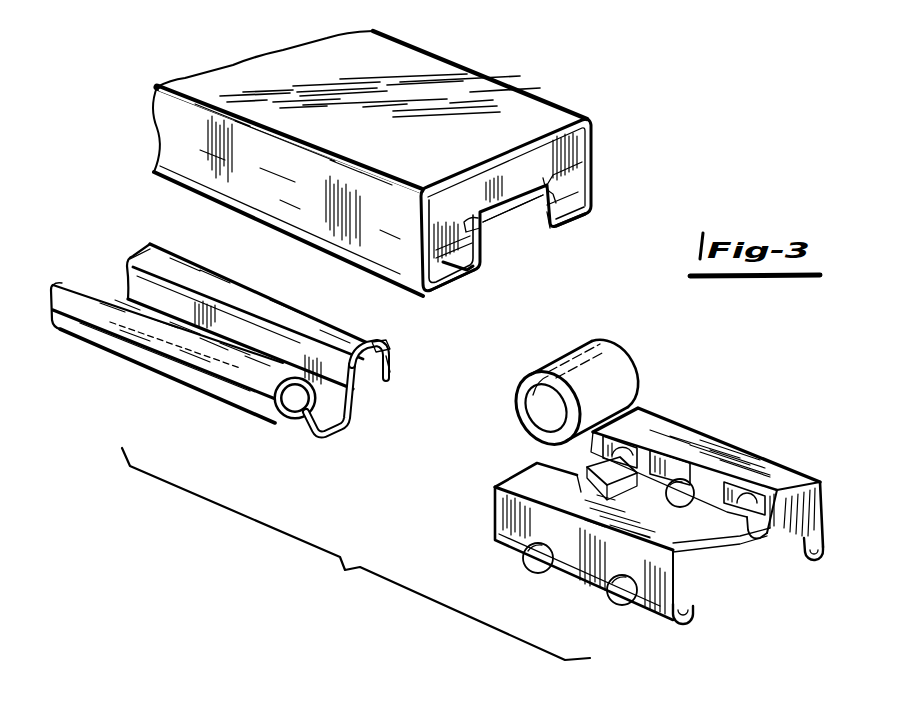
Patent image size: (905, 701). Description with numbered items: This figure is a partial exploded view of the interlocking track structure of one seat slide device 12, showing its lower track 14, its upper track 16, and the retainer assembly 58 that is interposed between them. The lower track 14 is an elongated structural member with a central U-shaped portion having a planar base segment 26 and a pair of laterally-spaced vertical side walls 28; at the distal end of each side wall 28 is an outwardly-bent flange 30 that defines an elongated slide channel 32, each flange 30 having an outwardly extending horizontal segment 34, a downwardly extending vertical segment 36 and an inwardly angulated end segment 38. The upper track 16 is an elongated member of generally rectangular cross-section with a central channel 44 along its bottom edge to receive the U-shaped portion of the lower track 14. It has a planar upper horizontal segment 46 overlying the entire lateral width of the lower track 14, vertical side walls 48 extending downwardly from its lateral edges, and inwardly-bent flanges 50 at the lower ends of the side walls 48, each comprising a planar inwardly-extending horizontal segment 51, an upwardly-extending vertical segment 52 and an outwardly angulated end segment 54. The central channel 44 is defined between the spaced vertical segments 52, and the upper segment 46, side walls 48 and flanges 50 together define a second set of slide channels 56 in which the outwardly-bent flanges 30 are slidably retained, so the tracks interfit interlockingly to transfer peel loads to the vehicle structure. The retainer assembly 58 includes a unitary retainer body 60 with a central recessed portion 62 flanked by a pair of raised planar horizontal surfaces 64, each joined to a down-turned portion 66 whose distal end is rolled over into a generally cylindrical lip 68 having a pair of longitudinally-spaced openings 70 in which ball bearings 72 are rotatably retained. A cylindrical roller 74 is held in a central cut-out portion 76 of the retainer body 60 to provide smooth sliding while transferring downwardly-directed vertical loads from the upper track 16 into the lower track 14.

The seat slide device 12 is at (560, 73).
The lower track 14 is at (76, 343).
The upper track 16 is at (407, 178).
The planar base segment 26 is at (322, 381).
The side walls 28 is at (364, 384).
The outwardly-bent flange 30 is at (384, 344).
The slide channel 32 is at (277, 421).
The horizontal segment 34 is at (372, 334).
The vertical segment 36 is at (389, 348).
The angulated end segment 38 is at (388, 372).
The central channel 44 is at (522, 255).
The upper horizontal segment 46 is at (523, 120).
The vertical side walls 48 is at (590, 167).
The inwardly-bent flange 50 is at (590, 221).
The horizontal segment 51 is at (567, 220).
The vertical segment 52 is at (477, 265).
The angulated end segment 54 is at (476, 186).
The slide channel 56 is at (573, 181).
The retainer assembly 58 is at (662, 486).
The retainer body 60 is at (662, 517).
The central recessed portion 62 is at (750, 528).
The raised planar horizontal surface 64 is at (523, 478).
The down-turned portion 66 is at (822, 523).
The cylindrical lip 68 is at (793, 541).
The opening 70 is at (604, 587).
The ball bearing 72 is at (623, 603).
The cylindrical roller 74 is at (600, 338).
The central cut-out portion 76 is at (686, 462).